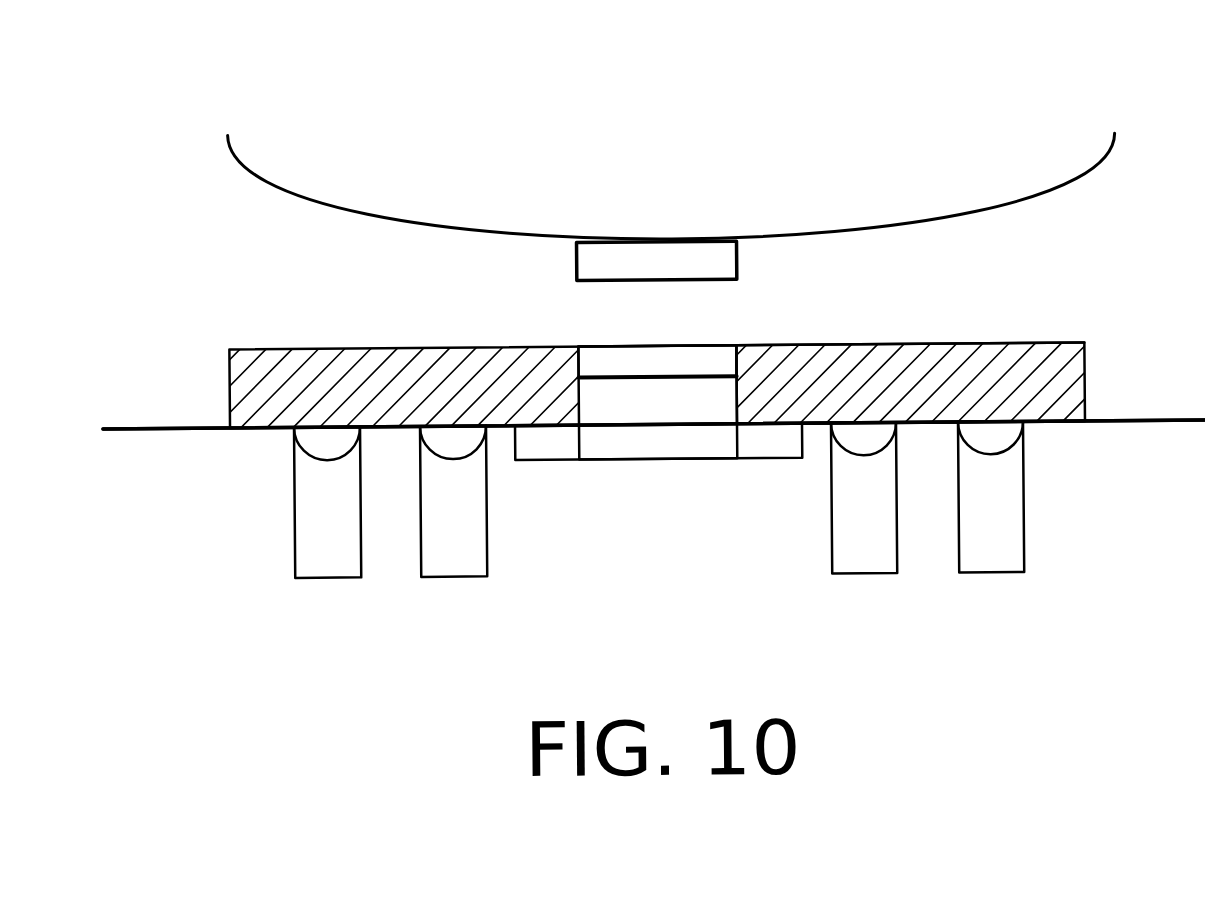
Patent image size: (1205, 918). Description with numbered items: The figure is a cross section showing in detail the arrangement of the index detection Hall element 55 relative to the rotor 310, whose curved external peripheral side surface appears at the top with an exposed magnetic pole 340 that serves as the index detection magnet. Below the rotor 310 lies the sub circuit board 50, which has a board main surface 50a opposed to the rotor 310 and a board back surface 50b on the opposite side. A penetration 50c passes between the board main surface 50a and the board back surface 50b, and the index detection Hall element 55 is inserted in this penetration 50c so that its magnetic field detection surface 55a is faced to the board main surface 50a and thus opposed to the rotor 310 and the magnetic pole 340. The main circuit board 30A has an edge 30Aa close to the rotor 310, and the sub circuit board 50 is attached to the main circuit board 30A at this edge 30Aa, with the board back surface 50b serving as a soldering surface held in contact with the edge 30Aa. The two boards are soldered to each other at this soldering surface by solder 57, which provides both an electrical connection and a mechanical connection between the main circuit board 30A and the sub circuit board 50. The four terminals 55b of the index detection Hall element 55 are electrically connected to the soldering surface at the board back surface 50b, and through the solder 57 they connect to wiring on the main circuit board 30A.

The rotor 310 is at (632, 156).
The magnetic pole 340 is at (635, 268).
The main circuit board 30A is at (197, 559).
The edge 30Aa is at (170, 424).
The sub circuit board 50 is at (1085, 376).
The board main surface 50a is at (942, 346).
The board back surface 50b is at (1066, 425).
The penetration 50c is at (743, 393).
The index detection Hall element 55 is at (617, 433).
The magnetic field detection surface 55a is at (660, 346).
The terminals 55b is at (768, 428).
The solder 57 is at (313, 441).